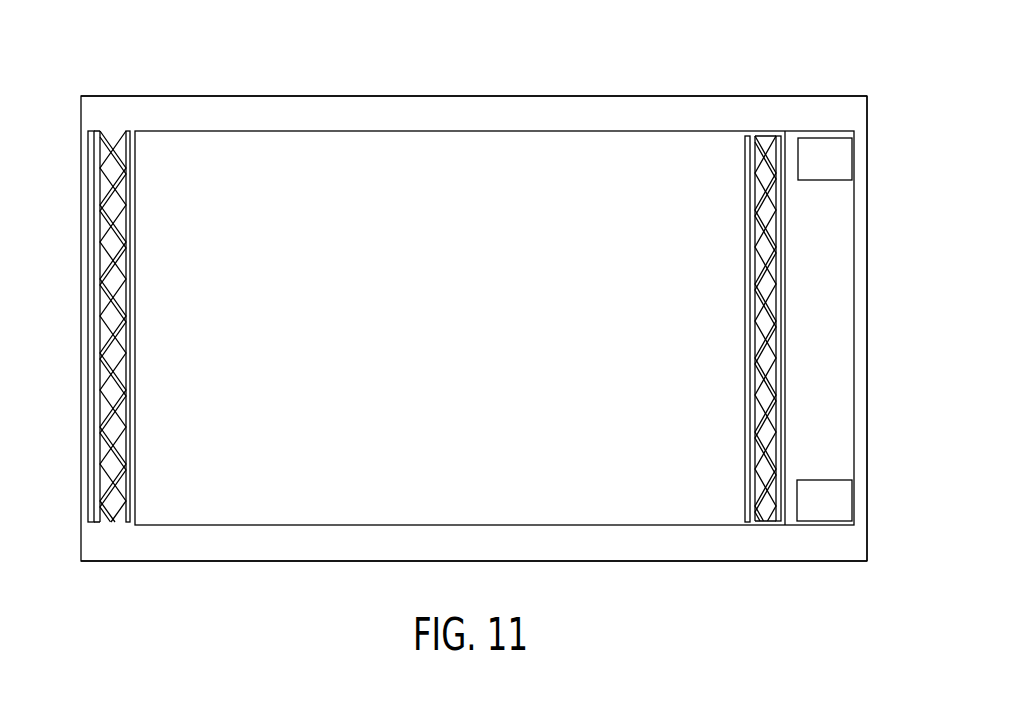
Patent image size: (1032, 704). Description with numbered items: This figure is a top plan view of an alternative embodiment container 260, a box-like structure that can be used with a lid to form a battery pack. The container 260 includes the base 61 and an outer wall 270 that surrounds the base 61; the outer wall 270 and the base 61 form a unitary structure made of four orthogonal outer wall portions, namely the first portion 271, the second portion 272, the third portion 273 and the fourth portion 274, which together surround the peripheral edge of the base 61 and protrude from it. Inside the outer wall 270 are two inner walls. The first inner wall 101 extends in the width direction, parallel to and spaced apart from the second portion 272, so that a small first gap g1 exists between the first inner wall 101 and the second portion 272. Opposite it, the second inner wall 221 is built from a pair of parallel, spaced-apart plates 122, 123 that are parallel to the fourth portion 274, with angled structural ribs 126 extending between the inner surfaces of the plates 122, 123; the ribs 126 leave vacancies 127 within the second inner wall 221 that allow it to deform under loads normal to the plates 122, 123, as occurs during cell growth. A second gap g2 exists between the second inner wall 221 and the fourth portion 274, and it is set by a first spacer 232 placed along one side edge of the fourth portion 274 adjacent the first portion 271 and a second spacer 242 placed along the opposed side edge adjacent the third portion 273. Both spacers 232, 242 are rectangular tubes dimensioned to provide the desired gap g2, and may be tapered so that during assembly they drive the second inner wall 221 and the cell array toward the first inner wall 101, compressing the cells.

The container 260 is at (198, 77).
The outer wall 270 is at (445, 112).
The first portion 271 is at (494, 328).
The second portion 272 is at (90, 350).
The first inner wall 101 is at (130, 320).
The first gap g1 is at (100, 213).
The base 61 is at (431, 334).
The second inner wall 221 is at (752, 244).
The plate 122 is at (750, 350).
The plate 123 is at (785, 352).
The vacancies 127 is at (762, 302).
The angled structural ribs 126 is at (768, 395).
The second gap g2 is at (854, 250).
The first spacer 232 is at (823, 155).
The second spacer 242 is at (825, 500).
The fourth portion 274 is at (868, 298).
The third portion 273 is at (594, 548).